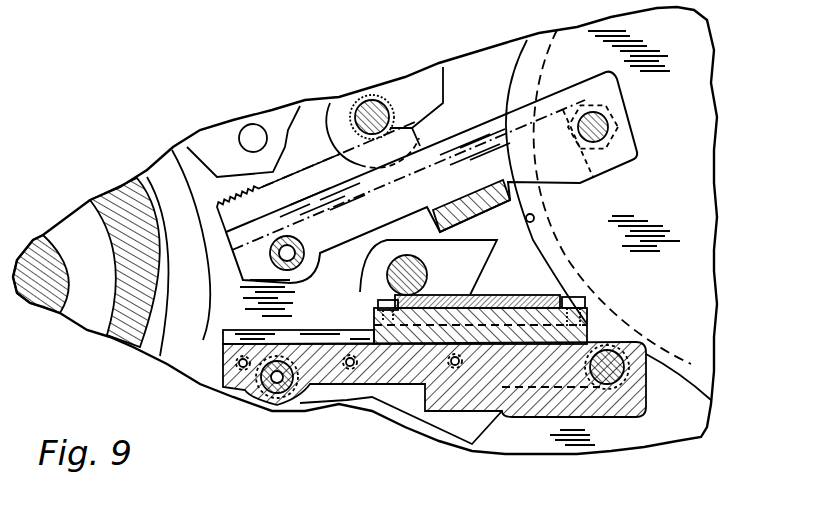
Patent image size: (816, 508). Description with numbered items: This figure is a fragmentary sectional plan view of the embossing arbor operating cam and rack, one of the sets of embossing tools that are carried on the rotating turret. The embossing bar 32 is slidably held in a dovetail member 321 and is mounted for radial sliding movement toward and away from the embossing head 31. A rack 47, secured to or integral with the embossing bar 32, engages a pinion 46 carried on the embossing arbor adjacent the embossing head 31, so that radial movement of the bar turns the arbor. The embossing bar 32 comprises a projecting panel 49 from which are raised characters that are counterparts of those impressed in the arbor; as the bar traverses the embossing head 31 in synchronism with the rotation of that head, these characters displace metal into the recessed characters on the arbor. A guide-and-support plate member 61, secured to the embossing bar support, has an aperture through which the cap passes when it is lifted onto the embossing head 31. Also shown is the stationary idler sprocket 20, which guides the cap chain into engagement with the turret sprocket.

The idler sprocket 20 is at (692, 382).
The embossing bar 32 is at (212, 232).
The dovetail member 321 is at (565, 398).
The embossing head 31 is at (385, 286).
The pinion 46 is at (390, 116).
The rack 47 is at (300, 167).
The projecting panel 49 is at (503, 293).
The guide-and-support plate member 61 is at (440, 82).